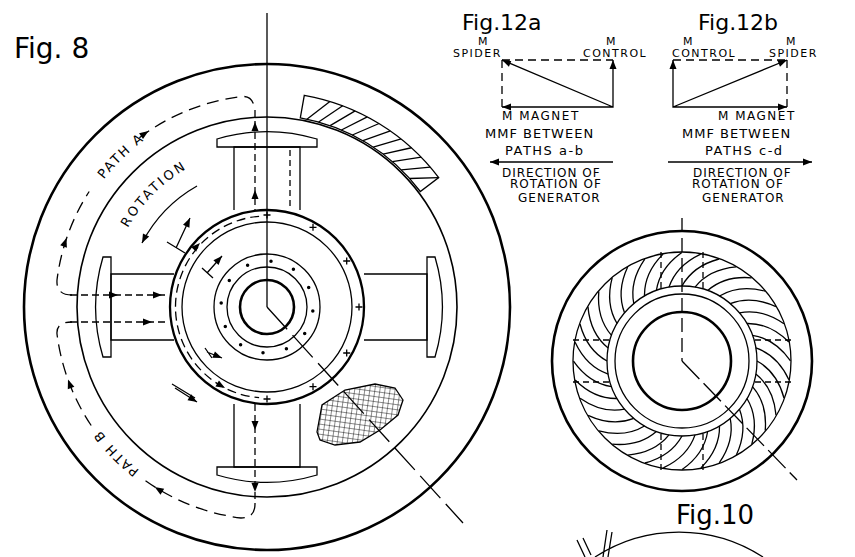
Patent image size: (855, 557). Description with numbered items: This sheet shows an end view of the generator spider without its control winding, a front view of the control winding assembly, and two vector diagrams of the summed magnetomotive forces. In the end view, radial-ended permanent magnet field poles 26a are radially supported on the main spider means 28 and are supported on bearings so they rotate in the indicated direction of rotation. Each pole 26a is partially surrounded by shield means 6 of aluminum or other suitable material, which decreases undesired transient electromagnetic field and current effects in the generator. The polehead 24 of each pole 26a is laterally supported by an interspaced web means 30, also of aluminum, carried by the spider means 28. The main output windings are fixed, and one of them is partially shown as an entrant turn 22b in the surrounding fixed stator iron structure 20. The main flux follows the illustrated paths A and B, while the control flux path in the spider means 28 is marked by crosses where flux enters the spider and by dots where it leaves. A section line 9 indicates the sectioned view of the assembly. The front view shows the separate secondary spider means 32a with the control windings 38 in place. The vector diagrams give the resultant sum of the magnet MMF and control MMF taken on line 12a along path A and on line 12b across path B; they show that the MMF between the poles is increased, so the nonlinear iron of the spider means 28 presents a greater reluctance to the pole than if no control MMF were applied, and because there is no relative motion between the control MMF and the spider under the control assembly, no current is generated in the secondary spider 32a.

In FIG. 8, the shield means 6 is at (300, 197).
In FIG. 8, the section line 9- 9 is at (488, 507).
In FIG. 10, the section line 9- 9 is at (808, 462).
In FIG. 8, the line 12a— 12a is at (205, 238).
In FIG. 8, the line 12b— 12b is at (211, 384).
In FIG. 8, the fixed stator iron structure 20 is at (282, 72).
In FIG. 8, the entrant turn 22b is at (328, 98).
In FIG. 8, the polehead 24 is at (303, 143).
In FIG. 8, the permanent magnet field pole 26a is at (275, 178).
In FIG. 8, the main spider means 28 is at (340, 240).
In FIG. 8, the interspaced web means 30 is at (403, 402).
In FIG. 10, the secondary spider means 32a is at (577, 288).
In FIG. 10, the control windings 38 is at (712, 273).